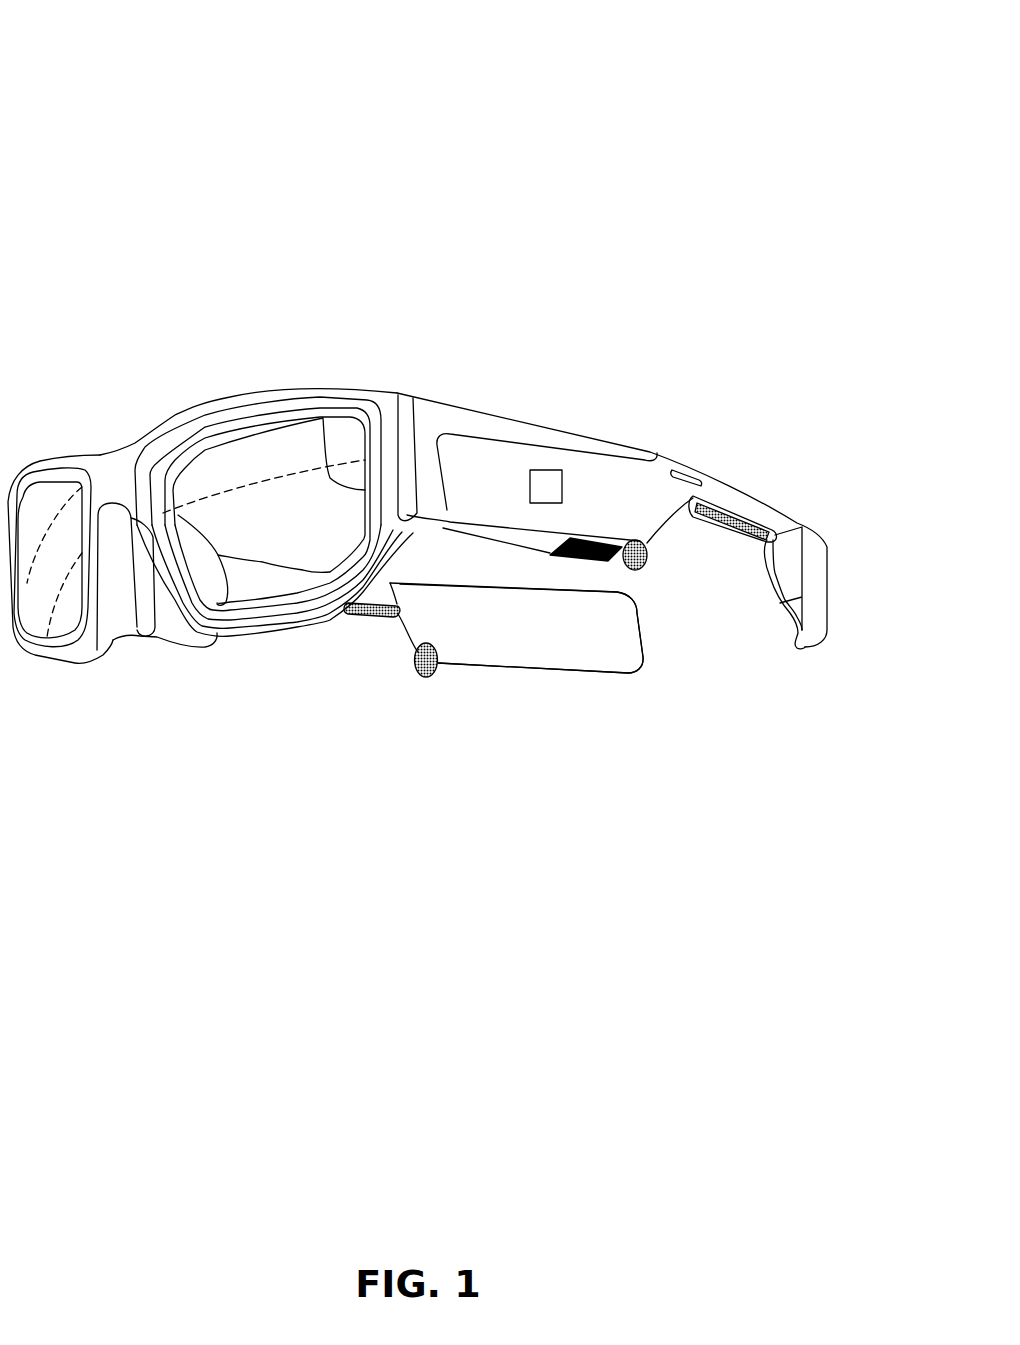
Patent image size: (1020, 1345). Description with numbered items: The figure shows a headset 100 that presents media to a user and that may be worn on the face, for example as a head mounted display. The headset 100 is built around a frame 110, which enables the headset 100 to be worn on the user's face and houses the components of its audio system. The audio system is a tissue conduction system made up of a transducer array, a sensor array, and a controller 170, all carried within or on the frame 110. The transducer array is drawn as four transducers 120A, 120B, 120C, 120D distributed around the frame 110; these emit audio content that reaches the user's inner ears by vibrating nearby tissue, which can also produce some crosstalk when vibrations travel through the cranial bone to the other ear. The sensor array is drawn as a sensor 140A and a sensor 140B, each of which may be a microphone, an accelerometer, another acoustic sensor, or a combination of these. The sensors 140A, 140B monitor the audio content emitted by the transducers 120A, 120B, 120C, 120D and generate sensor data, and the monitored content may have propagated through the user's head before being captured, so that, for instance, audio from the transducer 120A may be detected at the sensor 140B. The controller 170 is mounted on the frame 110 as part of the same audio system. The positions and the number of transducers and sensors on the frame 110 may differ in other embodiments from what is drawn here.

The headset 100 is at (58, 43).
The frame 110 is at (527, 418).
The transducer 120A is at (737, 517).
The transducer 120B is at (327, 648).
The transducer 120C is at (803, 645).
The transducer 120D is at (513, 657).
The sensor 140A is at (643, 570).
The sensor 140B is at (420, 673).
The controller 170 is at (547, 492).